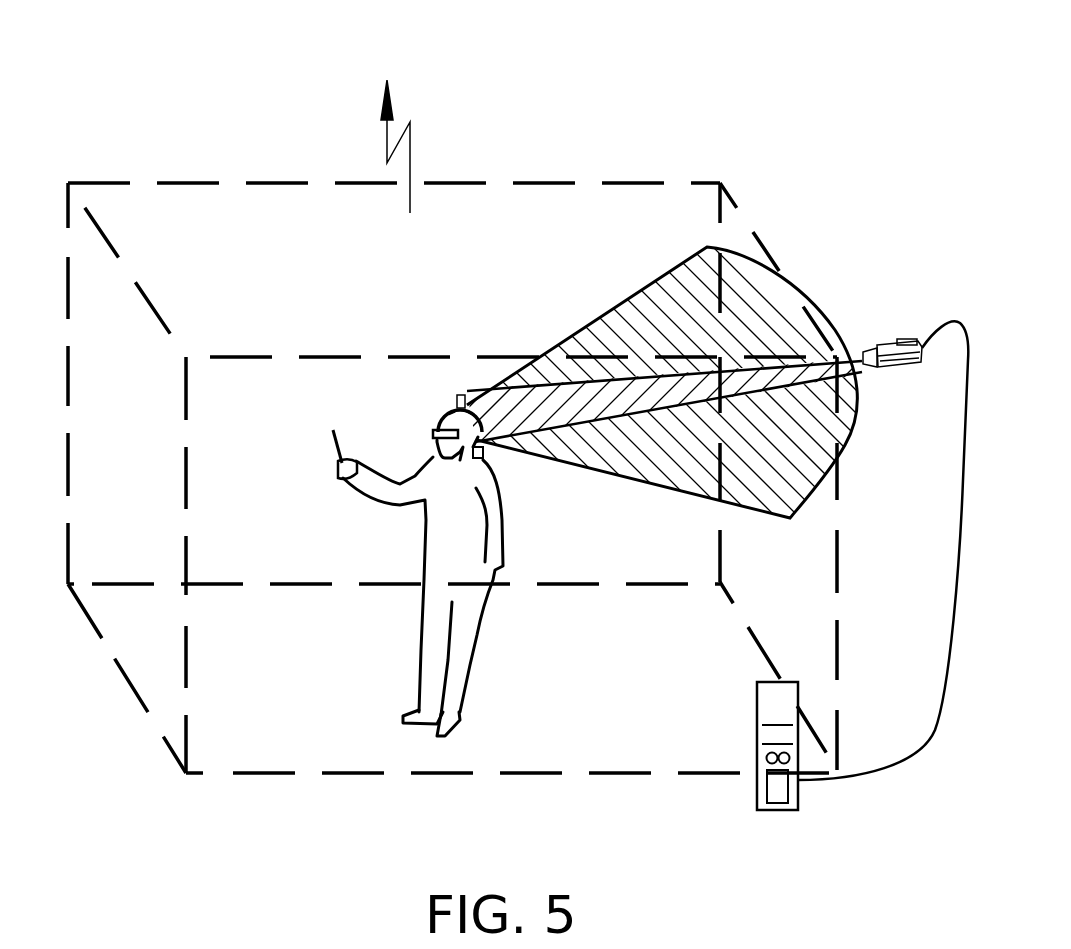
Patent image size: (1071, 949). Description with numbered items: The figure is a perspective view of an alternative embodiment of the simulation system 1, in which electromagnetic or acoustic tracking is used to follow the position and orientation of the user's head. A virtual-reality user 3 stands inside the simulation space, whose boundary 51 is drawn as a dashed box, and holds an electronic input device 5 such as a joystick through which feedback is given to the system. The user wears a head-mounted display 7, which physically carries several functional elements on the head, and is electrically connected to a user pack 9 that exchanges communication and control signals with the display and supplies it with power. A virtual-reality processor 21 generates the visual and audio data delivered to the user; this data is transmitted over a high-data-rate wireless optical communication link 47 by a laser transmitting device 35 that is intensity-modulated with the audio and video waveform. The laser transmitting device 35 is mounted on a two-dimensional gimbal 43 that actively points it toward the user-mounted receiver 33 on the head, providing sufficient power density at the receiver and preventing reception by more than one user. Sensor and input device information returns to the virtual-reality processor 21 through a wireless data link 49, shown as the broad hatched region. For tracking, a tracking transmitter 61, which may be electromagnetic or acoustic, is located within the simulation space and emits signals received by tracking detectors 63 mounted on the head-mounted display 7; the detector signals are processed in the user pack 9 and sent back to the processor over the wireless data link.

The simulation system 1 is at (855, 100).
The virtual-reality user 3 is at (535, 548).
The electronic input device 5 is at (330, 437).
The head-mounted display 7 is at (432, 430).
The user pack 9 is at (495, 458).
The virtual-reality processor 21 is at (747, 705).
The user-mounted receiver 33 is at (458, 397).
The laser transmitting device 35 is at (888, 373).
The two-dimensional gimbal 43 is at (907, 337).
The wireless optical communication link 47 is at (518, 378).
The wireless data link 49 is at (633, 290).
The boundary of the virtual environment 51 is at (612, 180).
The tracking transmitter 61 is at (425, 140).
The tracking detectors 63 is at (447, 405).